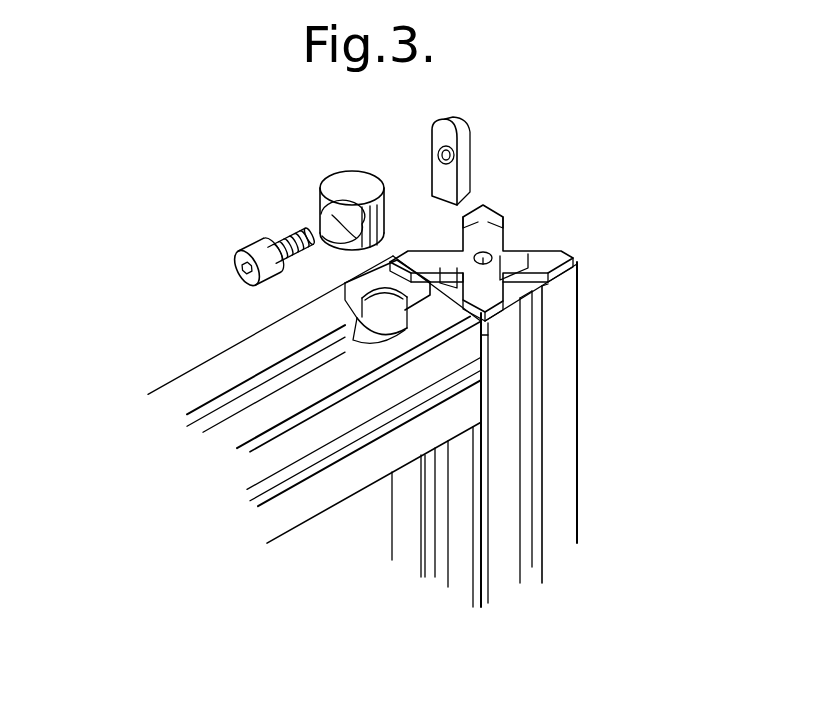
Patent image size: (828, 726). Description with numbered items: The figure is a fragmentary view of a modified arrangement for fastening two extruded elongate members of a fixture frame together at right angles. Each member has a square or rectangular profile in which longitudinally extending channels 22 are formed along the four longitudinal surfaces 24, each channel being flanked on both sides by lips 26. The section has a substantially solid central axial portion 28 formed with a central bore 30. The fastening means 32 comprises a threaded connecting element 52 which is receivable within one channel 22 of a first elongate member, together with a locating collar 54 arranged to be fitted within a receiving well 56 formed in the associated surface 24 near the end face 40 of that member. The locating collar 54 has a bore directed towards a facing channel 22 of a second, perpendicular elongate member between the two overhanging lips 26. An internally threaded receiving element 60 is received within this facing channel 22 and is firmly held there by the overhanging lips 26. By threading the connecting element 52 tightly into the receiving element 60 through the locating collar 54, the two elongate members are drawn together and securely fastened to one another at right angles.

The longitudinally extending channel 22 is at (533, 236).
The longitudinal surface 24 is at (558, 470).
The lip 26 is at (482, 302).
The central axial portion 28 is at (486, 248).
The central bore 30 is at (520, 232).
The fastening means 32 is at (352, 144).
The end face 40 is at (483, 345).
The threaded connecting element 52 is at (280, 240).
The locating collar 54 is at (322, 191).
The receiving well 56 is at (345, 300).
The internally threaded receiving element 60 is at (440, 122).